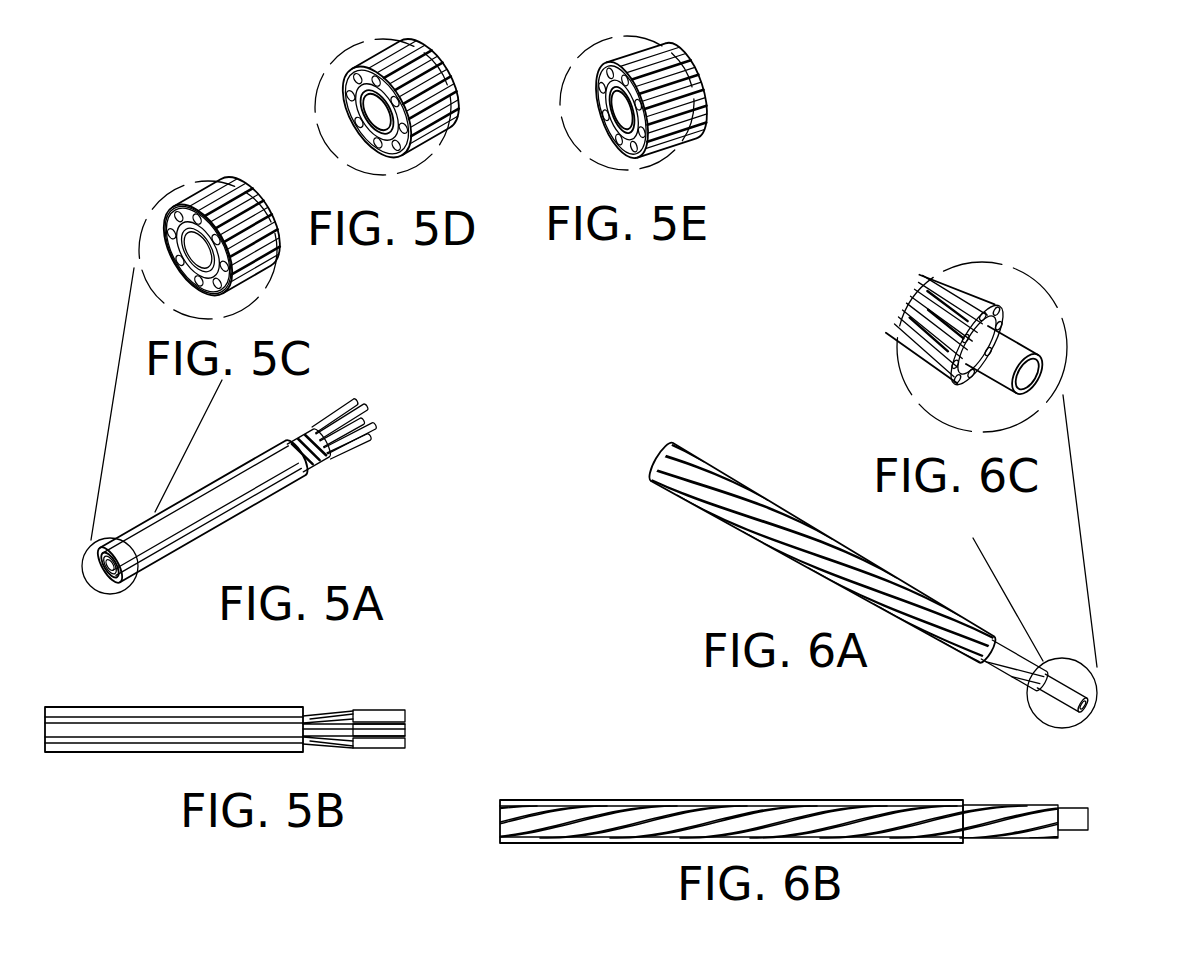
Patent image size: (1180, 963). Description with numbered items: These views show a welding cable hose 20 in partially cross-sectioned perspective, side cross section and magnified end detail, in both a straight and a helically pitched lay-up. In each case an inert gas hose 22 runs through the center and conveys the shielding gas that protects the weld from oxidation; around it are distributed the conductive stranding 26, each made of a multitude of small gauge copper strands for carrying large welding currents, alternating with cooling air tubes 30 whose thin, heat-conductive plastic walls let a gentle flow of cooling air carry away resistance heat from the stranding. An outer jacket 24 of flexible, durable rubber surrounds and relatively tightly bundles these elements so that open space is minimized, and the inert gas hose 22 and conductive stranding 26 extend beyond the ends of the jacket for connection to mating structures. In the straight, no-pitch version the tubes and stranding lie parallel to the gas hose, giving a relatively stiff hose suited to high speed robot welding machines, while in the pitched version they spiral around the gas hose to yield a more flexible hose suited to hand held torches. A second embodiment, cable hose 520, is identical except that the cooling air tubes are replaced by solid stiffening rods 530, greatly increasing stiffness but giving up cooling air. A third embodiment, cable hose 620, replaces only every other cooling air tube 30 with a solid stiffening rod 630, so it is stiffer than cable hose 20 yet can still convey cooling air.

In FIG. 5C, the cable hose 20 is at (206, 148).
In FIG. 5A, the cable hose 20 is at (134, 510).
In FIG. 5B, the cable hose 20 is at (218, 684).
In FIG. 6A, the cable hose 20 is at (736, 462).
In FIG. 6B, the cable hose 20 is at (690, 777).
In FIG. 6C, the cable hose 20 is at (884, 319).
In FIG. 5C, the inert gas hose 22 is at (267, 276).
In FIG. 5A, the inert gas hose 22 is at (118, 592).
In FIG. 5B, the inert gas hose 22 is at (373, 720).
In FIG. 6A, the inert gas hose 22 is at (1028, 697).
In FIG. 6B, the inert gas hose 22 is at (1074, 808).
In FIG. 6C, the inert gas hose 22 is at (1006, 367).
In FIG. 5C, the outer jacket 24 is at (219, 183).
In FIG. 5A, the outer jacket 24 is at (202, 488).
In FIG. 5B, the outer jacket 24 is at (135, 705).
In FIG. 6A, the outer jacket 24 is at (787, 513).
In FIG. 6B, the outer jacket 24 is at (757, 800).
In FIG. 6C, the outer jacket 24 is at (941, 323).
In FIG. 5C, the conductive stranding 26 is at (258, 201).
In FIG. 5A, the conductive stranding 26 is at (265, 492).
In FIG. 5B, the conductive stranding 26 is at (307, 718).
In FIG. 6A, the conductive stranding 26 is at (872, 585).
In FIG. 6B, the conductive stranding 26 is at (1018, 808).
In FIG. 6C, the conductive stranding 26 is at (925, 347).
In FIG. 5C, the cooling air tubes 30 is at (257, 243).
In FIG. 5E, the cooling air tubes 30 is at (635, 48).
In FIG. 5A, the cooling air tubes 30 is at (203, 524).
In FIG. 5B, the cooling air tubes 30 is at (264, 722).
In FIG. 6A, the cooling air tubes 30 is at (830, 570).
In FIG. 6B, the cooling air tubes 30 is at (990, 805).
In FIG. 6C, the cooling air tubes 30 is at (993, 305).
In FIG. 5D, the cable hose 520 is at (462, 64).
In FIG. 5D, the solid stiffening rods 530 is at (407, 147).
In FIG. 5E, the cable hose 620 is at (714, 63).
In FIG. 5E, the solid stiffening rod 630 is at (597, 80).